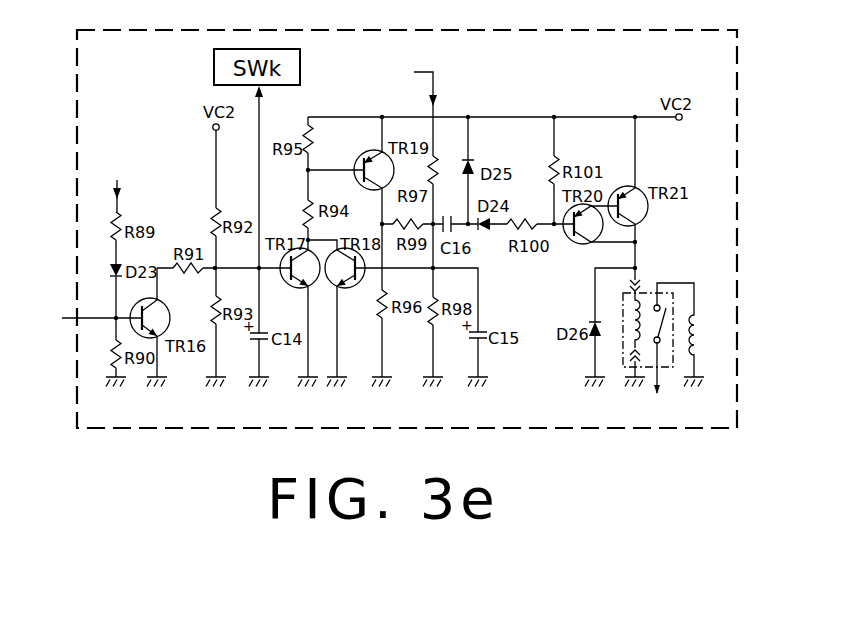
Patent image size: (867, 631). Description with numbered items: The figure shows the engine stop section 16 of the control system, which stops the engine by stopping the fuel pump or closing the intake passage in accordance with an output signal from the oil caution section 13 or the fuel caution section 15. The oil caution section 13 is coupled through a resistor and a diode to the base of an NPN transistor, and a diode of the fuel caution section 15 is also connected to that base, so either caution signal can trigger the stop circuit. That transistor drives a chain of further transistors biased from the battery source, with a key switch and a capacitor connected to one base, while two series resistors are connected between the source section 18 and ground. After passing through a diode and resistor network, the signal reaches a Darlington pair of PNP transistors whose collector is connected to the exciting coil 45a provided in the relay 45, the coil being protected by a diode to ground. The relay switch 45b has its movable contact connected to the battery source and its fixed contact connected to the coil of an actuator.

The oil caution section 13 is at (119, 185).
The fuel caution section 15 is at (90, 319).
The engine stop section 16 is at (633, 6).
The source section 18 is at (413, 90).
The relay 45 is at (633, 347).
The exciting coil 45a is at (632, 308).
The switch 45b is at (666, 355).